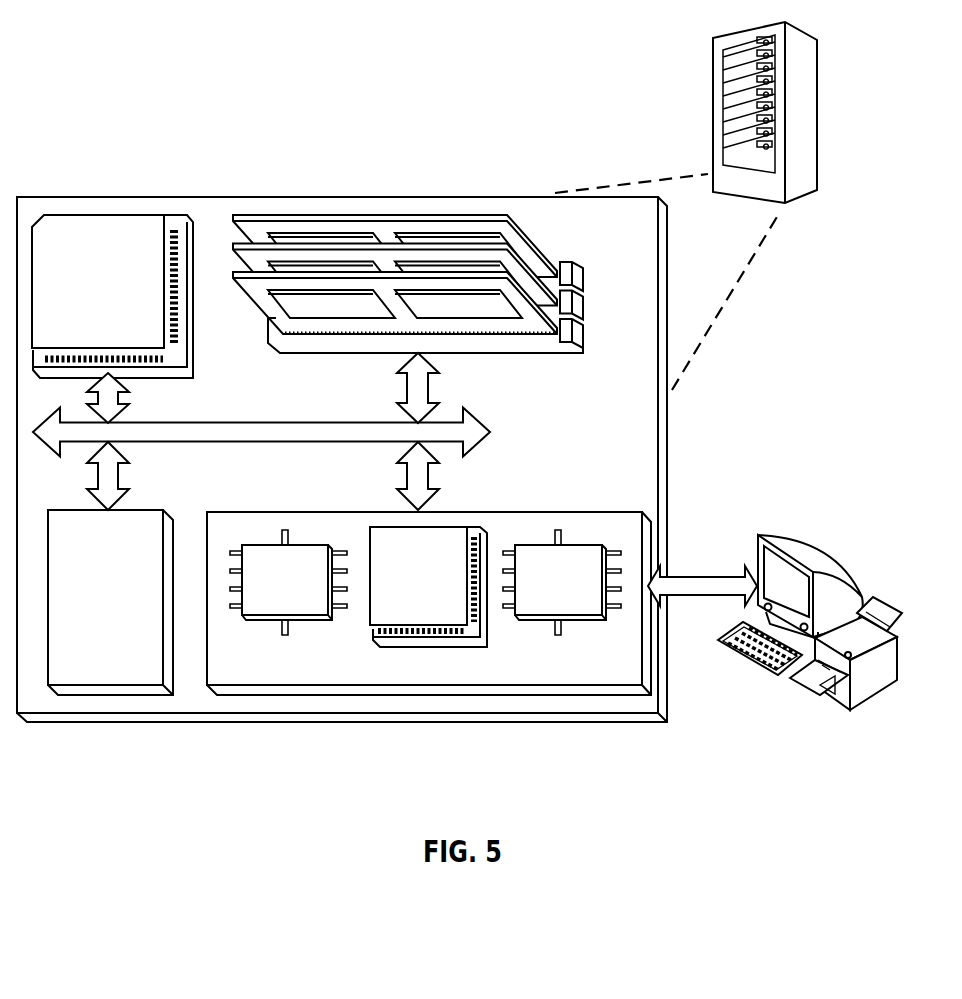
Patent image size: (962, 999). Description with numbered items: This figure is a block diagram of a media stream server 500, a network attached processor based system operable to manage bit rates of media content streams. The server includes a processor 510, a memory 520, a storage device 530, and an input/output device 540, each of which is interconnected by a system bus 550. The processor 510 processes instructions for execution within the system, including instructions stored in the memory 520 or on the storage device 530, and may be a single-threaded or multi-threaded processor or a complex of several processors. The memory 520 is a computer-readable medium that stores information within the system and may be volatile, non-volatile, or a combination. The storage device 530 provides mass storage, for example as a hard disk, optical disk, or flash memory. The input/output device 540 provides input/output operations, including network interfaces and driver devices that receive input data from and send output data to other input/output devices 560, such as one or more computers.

The media stream server 500 is at (83, 100).
The processor 510 is at (155, 342).
The memory 520 is at (556, 258).
The storage device 530 is at (143, 676).
The input/output device 540 is at (604, 512).
The system bus 550 is at (257, 442).
The input/output devices 560 is at (757, 537).